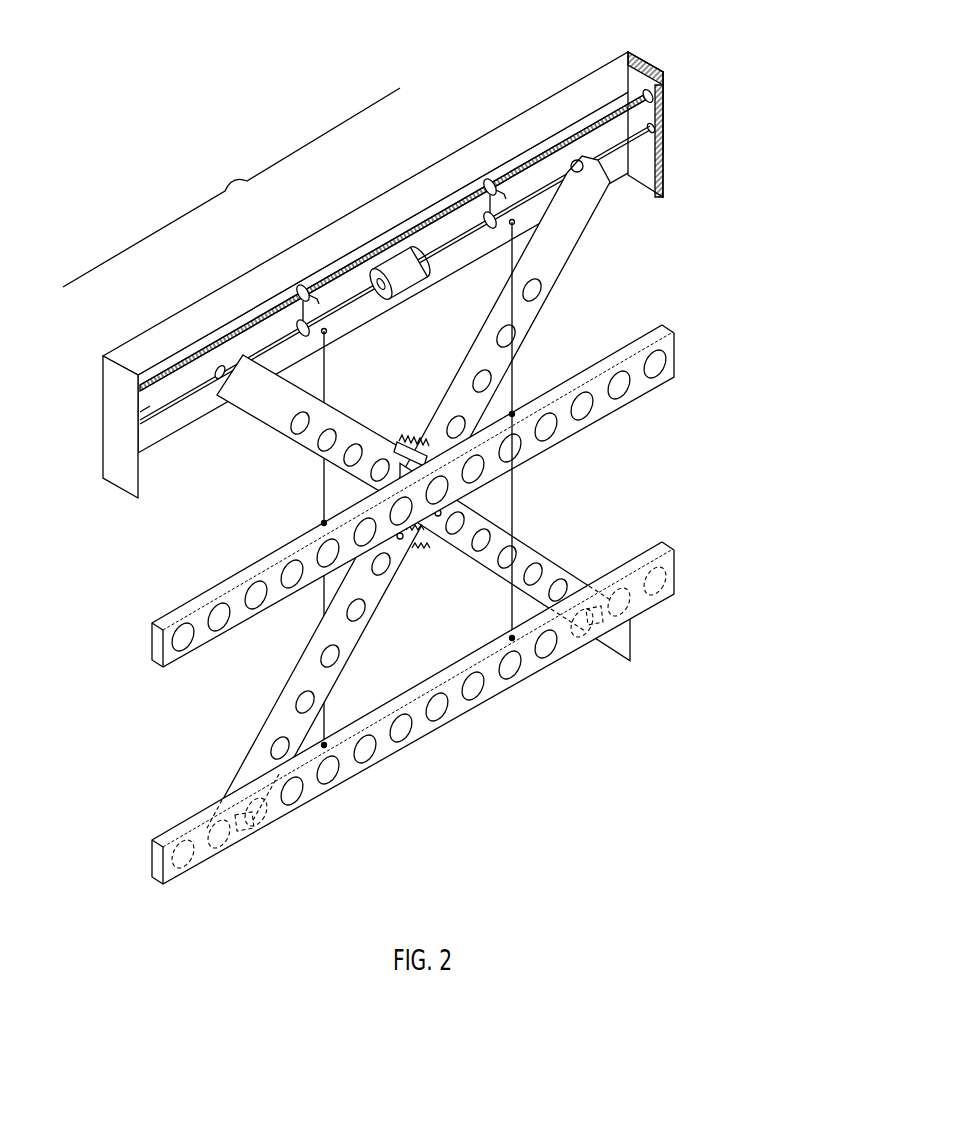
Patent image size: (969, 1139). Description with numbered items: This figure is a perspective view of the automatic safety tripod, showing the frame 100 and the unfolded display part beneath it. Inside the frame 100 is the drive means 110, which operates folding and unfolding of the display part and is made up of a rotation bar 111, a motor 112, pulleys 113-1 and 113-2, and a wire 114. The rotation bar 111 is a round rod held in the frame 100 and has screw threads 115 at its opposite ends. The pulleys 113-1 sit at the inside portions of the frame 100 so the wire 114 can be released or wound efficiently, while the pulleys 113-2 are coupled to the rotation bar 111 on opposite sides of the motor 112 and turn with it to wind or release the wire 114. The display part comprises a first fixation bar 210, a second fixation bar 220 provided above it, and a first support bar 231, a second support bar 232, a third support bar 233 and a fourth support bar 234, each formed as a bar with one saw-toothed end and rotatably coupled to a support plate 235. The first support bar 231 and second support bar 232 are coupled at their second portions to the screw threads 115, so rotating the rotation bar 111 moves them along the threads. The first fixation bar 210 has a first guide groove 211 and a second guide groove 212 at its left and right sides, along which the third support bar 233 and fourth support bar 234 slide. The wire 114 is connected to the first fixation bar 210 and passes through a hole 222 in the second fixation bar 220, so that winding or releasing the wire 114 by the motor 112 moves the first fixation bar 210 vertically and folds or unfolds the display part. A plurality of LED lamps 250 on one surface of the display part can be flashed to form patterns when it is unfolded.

The frame 100 is at (600, 86).
The drive means 110 is at (231, 187).
The rotation bar 111 is at (318, 282).
The motor 112 is at (389, 254).
The pulleys 113-1 is at (296, 289).
The pulleys 113-2 is at (298, 323).
The wire 114 is at (270, 348).
The screw threads 115 is at (186, 378).
The first fixation bar 210 is at (678, 575).
The first guide groove 211 is at (200, 848).
The second guide groove 212 is at (642, 600).
The second fixation bar 220 is at (678, 358).
The hole 222 is at (318, 521).
The first support bar 231 is at (280, 420).
The second support bar 232 is at (583, 224).
The third support bar 233 is at (270, 722).
The fourth support bar 234 is at (552, 562).
The support plate 235 is at (408, 443).
The LED lamps 250 is at (657, 372).